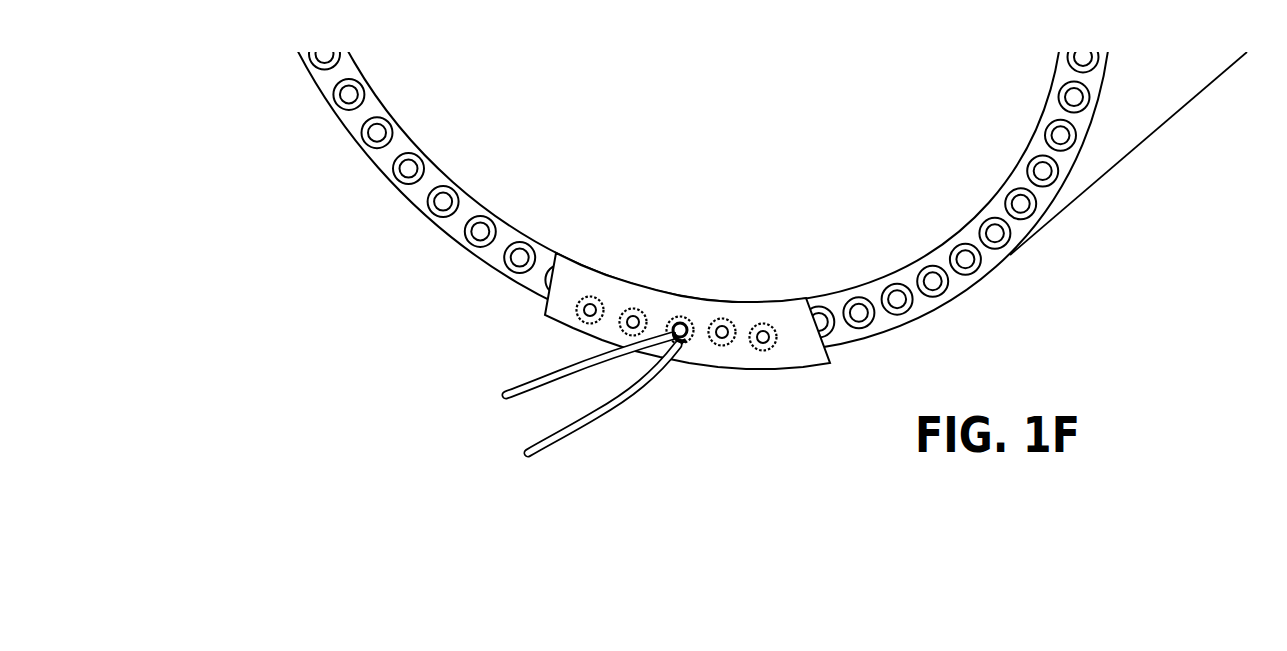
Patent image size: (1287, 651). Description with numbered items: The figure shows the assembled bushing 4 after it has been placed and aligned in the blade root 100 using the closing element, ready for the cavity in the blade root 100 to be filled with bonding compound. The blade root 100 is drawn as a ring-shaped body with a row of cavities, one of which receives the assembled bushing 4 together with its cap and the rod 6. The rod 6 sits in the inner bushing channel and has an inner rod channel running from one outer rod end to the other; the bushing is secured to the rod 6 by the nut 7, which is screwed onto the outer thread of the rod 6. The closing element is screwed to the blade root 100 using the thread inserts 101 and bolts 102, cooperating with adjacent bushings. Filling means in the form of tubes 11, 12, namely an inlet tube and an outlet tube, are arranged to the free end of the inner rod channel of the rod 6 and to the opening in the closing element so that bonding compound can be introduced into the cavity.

The blade root 100 is at (1148, 107).
The assembled bushing 4 is at (793, 353).
The thread inserts 101 is at (630, 326).
The bolts 102 is at (597, 307).
The nut 7 is at (680, 320).
The rod 6 is at (687, 343).
The tube 11 is at (512, 382).
The tube 12 is at (590, 426).